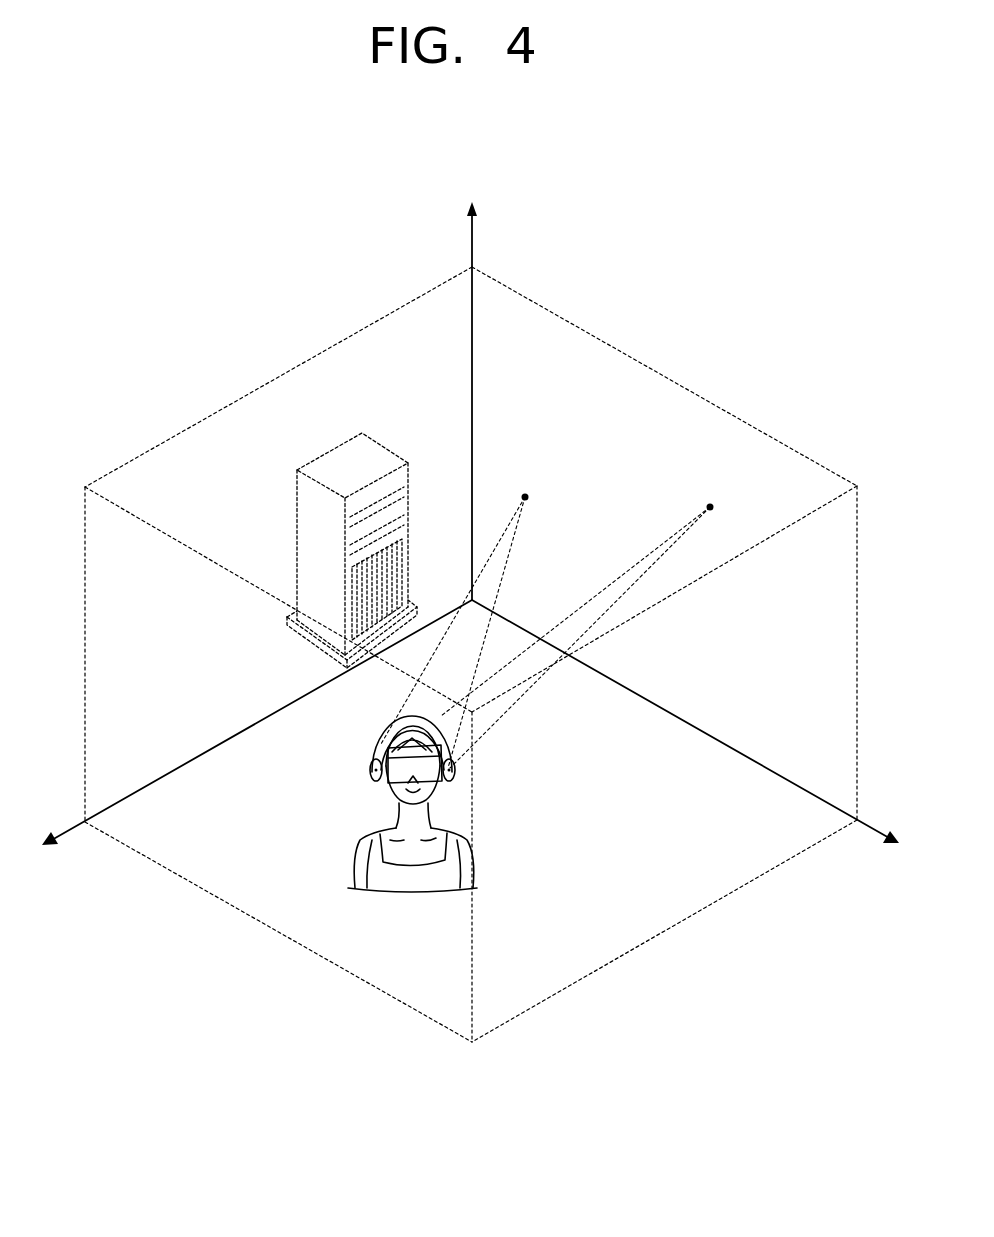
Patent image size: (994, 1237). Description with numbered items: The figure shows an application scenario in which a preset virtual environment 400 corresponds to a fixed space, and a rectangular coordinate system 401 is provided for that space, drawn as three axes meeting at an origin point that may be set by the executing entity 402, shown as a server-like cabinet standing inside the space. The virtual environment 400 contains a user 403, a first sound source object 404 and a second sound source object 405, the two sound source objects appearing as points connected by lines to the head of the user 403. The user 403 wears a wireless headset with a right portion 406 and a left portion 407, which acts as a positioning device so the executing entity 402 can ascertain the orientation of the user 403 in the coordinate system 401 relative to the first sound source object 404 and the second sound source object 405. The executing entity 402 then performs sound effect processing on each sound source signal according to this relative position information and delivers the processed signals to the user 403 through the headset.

The virtual environment 400 is at (803, 370).
The rectangular coordinate system 401 is at (622, 352).
The executing entity 402 is at (380, 447).
The user 403 is at (358, 867).
The first sound source object 404 is at (526, 493).
The second sound source object 405 is at (711, 502).
The right portion 406 is at (370, 770).
The left portion 407 is at (455, 771).